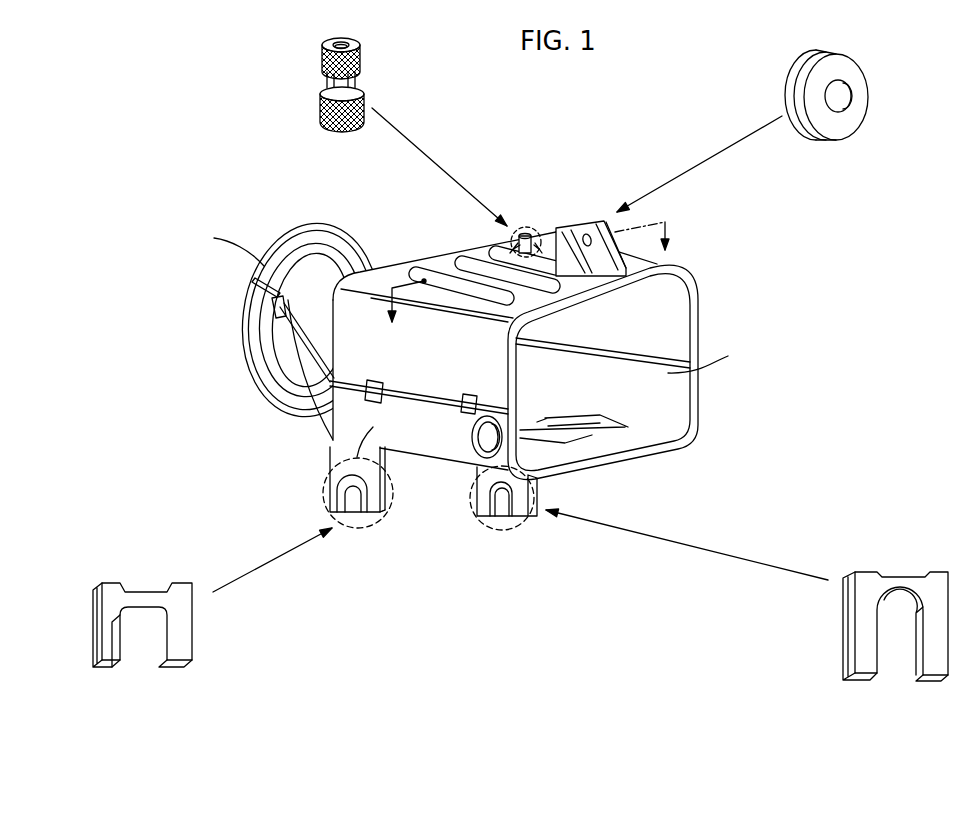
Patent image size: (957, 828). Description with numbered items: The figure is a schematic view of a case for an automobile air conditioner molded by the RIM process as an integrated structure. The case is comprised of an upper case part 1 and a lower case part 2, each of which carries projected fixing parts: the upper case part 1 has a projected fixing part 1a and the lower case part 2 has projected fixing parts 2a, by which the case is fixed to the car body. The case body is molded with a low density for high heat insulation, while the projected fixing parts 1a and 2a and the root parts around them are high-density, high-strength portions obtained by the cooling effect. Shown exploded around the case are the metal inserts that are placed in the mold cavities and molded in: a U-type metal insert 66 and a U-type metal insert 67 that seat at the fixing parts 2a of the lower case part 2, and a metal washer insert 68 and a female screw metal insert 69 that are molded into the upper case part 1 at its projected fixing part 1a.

The upper case part 1 is at (652, 270).
The projected fixing part 1a is at (580, 224).
The lower case part 2 is at (333, 465).
The projected fixing part 2a is at (338, 496).
The U-type metal insert 66 is at (185, 632).
The U-type metal insert 67 is at (862, 629).
The metal washer insert 68 is at (862, 95).
The female screw metal insert 69 is at (358, 52).